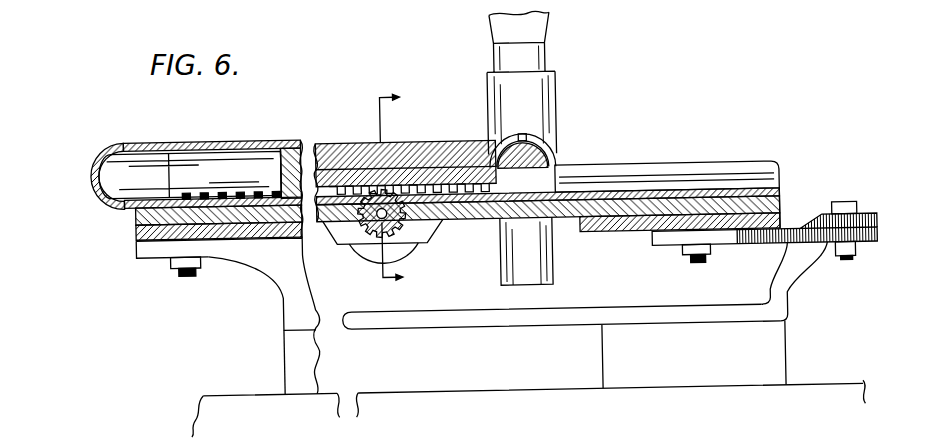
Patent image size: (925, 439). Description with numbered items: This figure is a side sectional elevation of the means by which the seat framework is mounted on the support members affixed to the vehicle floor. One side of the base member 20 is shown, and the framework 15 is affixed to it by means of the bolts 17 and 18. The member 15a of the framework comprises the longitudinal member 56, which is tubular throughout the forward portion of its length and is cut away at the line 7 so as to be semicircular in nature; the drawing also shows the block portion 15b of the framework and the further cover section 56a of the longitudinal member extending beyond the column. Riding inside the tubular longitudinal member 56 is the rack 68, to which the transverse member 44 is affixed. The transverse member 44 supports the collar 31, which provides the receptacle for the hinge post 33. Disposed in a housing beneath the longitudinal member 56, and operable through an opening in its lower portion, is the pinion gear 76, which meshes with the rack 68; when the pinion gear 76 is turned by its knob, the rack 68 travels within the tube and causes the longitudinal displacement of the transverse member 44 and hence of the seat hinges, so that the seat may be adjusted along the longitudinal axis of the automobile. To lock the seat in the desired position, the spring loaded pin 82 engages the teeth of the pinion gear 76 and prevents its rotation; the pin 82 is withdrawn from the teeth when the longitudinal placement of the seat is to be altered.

The longitudinal member 56 is at (131, 142).
The rack 68 is at (210, 153).
The member 15a is at (113, 208).
The framework 15 is at (135, 222).
The bolt 17 is at (178, 272).
The base member 20 is at (281, 296).
The line 7— 7 is at (398, 187).
The block portion of support plate 15b is at (468, 118).
The pinion gear 76 is at (353, 258).
The spring loaded pin 82 is at (413, 232).
The collar 31 is at (558, 122).
The transverse member 44 is at (550, 166).
The hinge post 33 is at (553, 248).
The cover section 56a is at (735, 172).
The bolt 18 is at (835, 272).